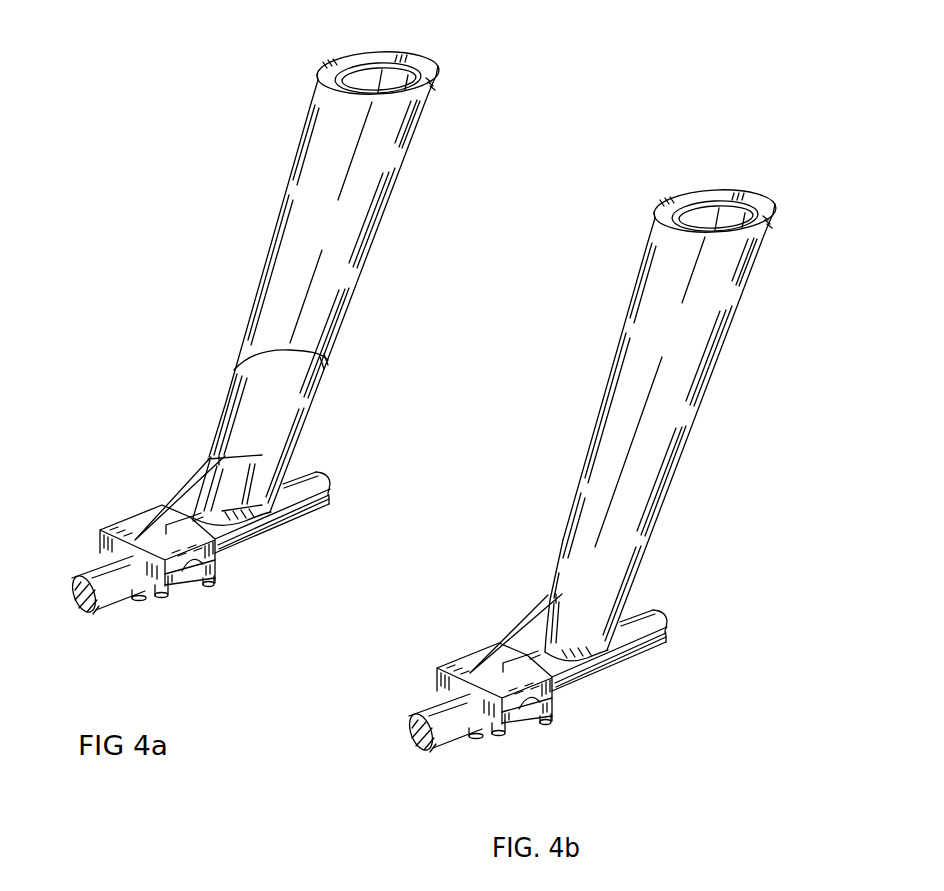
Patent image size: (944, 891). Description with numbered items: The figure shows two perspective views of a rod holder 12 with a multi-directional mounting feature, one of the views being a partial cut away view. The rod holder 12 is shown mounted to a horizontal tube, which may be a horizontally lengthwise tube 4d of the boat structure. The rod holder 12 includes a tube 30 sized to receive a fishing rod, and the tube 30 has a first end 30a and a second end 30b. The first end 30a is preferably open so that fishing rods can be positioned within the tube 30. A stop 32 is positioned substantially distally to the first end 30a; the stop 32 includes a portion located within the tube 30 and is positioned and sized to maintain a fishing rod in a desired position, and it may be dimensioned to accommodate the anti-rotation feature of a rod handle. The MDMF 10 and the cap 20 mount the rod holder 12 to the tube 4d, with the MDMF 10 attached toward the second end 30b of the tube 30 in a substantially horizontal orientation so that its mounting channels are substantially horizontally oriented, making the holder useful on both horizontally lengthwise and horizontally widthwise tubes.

In FIG. 4a, the horizontally lengthwise tube 4d is at (95, 562).
In FIG. 4b, the horizontally lengthwise tube 4d is at (417, 714).
In FIG. 4a, the MDMF 10 is at (215, 567).
In FIG. 4b, the MDMF 10 is at (482, 704).
In FIG. 4a, the rod holder 12 is at (331, 281).
In FIG. 4b, the rod holder 12 is at (666, 410).
In FIG. 4a, the cap 20 is at (177, 592).
In FIG. 4b, the cap 20 is at (494, 720).
In FIG. 4a, the tube 30 is at (363, 268).
In FIG. 4b, the tube 30 is at (673, 428).
In FIG. 4a, the first end 30a is at (441, 70).
In FIG. 4b, the first end 30a is at (758, 191).
In FIG. 4a, the second end 30b is at (237, 408).
In FIG. 4b, the second end 30b is at (596, 607).
In FIG. 4a, the stop 32 is at (242, 477).